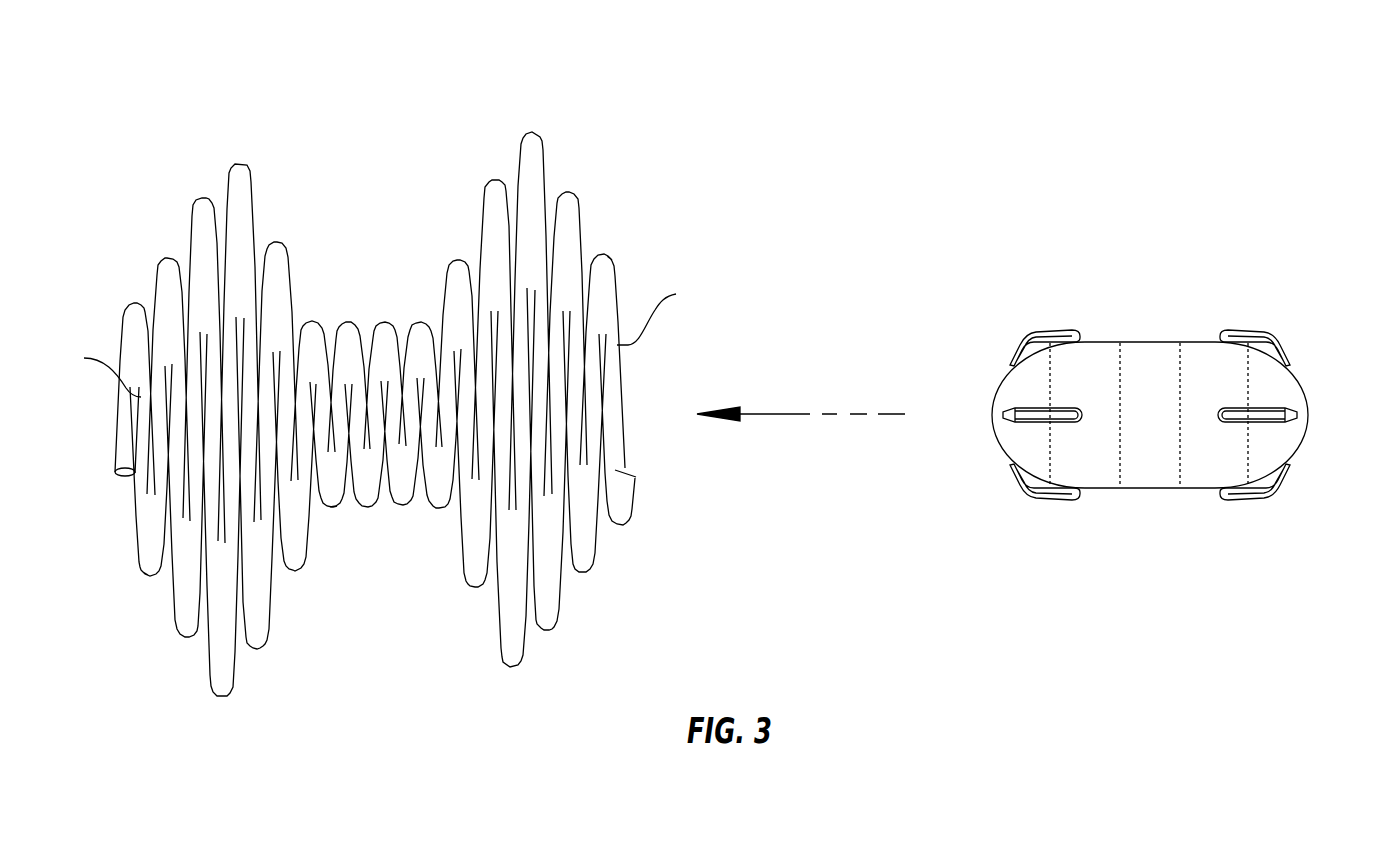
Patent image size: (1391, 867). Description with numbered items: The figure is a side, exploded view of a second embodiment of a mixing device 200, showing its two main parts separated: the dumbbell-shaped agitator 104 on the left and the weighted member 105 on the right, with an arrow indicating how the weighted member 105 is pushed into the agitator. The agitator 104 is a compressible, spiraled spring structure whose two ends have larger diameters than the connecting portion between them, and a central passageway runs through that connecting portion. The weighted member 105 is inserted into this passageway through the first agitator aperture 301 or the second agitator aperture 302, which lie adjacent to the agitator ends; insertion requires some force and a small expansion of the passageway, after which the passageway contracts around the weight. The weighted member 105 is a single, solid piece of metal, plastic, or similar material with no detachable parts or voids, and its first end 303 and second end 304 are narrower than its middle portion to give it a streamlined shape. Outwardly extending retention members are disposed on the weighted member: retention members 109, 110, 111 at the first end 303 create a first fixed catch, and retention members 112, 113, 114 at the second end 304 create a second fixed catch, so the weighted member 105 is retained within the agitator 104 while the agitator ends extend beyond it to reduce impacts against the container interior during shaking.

The heating assembly 200 is at (894, 84).
The dumbbell-shaped agitator 104 is at (124, 455).
The first agitator aperture 301 is at (94, 373).
The second agitator aperture 302 is at (663, 313).
The weighted member 105 is at (1156, 364).
The retention member 109 is at (1018, 342).
The retention member 112 is at (1272, 340).
The retention member 111 is at (1028, 483).
The retention member 114 is at (1270, 485).
The first end 303 is at (1004, 411).
The second end 304 is at (1296, 411).
The retention member 110 is at (1000, 424).
The retention member 113 is at (1300, 424).